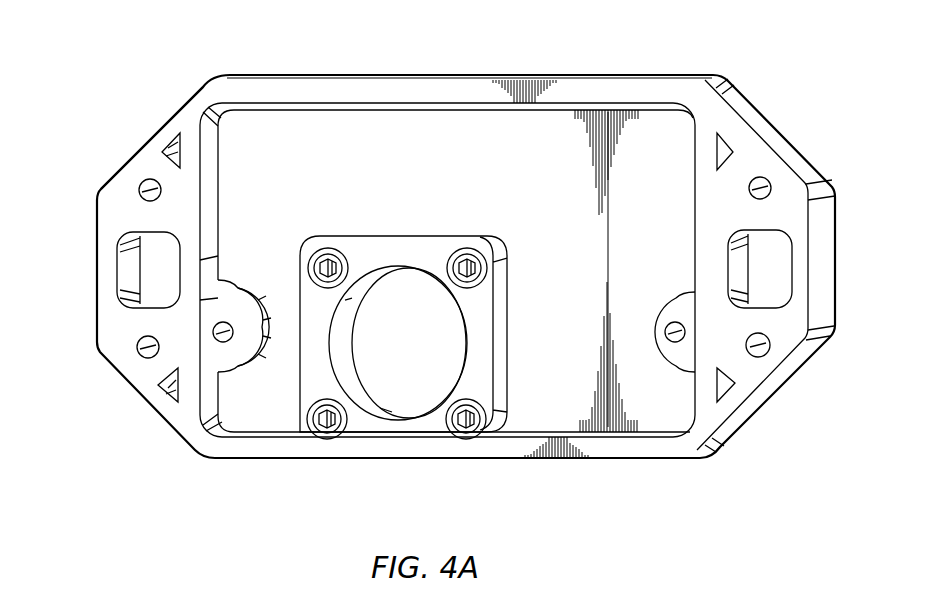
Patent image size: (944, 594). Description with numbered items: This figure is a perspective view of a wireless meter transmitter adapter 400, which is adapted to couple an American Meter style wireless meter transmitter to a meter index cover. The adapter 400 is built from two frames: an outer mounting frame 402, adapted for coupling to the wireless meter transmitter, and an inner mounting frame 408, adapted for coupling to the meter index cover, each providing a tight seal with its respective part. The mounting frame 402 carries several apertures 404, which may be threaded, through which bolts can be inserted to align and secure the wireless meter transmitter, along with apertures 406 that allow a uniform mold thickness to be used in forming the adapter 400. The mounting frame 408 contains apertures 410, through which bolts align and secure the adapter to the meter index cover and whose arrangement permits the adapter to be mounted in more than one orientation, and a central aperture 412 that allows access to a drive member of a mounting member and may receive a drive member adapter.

The wireless meter transmitter adapter 400 is at (360, 74).
The mounting frame 402 is at (182, 120).
The apertures 404 is at (139, 195).
The apertures 406 is at (121, 272).
The mounting frame 408 is at (500, 323).
The apertures 410 is at (456, 248).
The aperture 412 is at (392, 412).